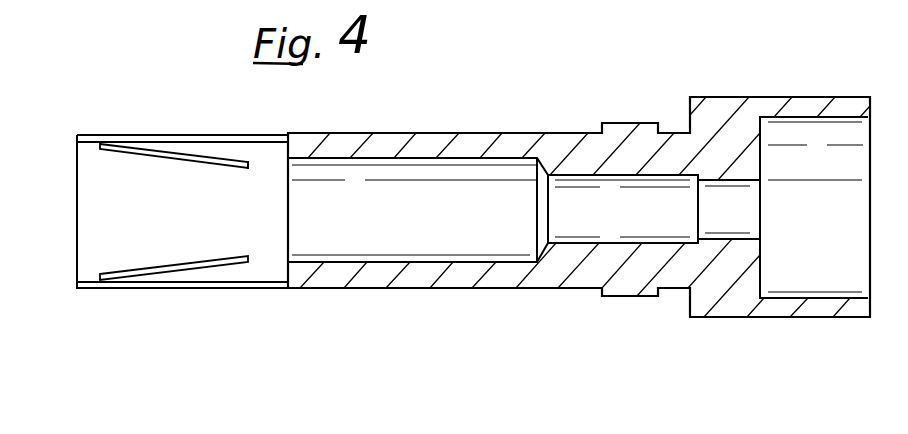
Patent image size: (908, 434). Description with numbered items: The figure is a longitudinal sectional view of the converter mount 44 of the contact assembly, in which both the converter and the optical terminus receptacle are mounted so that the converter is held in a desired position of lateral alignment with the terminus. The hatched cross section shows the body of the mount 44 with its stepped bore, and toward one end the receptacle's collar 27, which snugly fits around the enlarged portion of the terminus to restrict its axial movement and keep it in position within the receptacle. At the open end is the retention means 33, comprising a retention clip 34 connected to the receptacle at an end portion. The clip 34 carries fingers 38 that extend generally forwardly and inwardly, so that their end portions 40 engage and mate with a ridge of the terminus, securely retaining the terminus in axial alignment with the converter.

The collar 27 is at (462, 142).
The retention means 33 is at (205, 290).
The retention clip 34 is at (137, 290).
The fingers 38 is at (208, 155).
The end portions 40 is at (250, 167).
The converter mount 44 is at (450, 288).